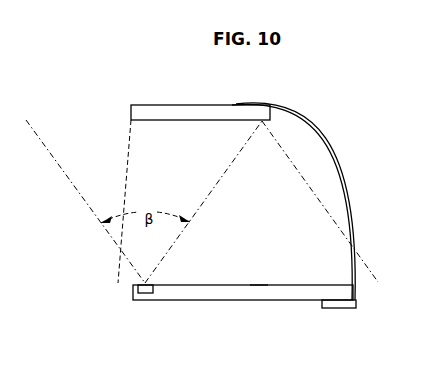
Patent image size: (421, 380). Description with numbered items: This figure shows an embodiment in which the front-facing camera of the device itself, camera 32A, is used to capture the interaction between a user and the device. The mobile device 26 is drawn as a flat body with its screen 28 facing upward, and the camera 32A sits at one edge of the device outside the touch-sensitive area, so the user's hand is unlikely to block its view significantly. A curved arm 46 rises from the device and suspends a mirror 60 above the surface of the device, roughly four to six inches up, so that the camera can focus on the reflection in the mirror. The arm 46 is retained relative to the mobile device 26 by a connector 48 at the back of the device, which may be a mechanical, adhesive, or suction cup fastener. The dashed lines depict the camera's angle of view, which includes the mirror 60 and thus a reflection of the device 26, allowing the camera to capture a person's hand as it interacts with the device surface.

The mirror 60 is at (252, 113).
The arm 46 is at (323, 138).
The mobile device 26 is at (183, 287).
The screen 28 is at (258, 283).
The camera 32A is at (148, 293).
The connector 48 is at (340, 302).